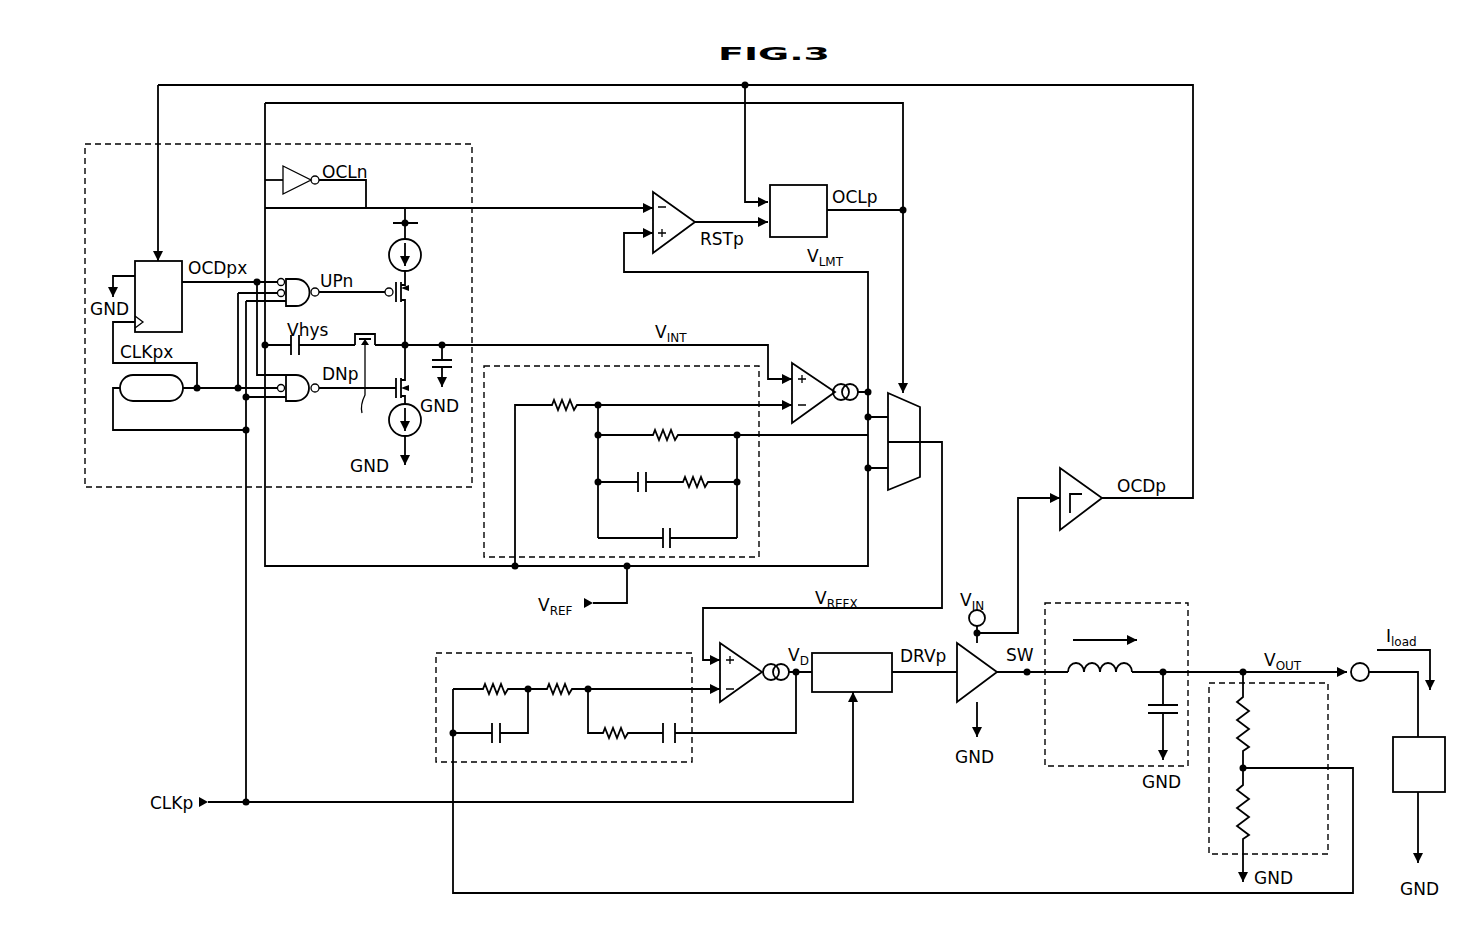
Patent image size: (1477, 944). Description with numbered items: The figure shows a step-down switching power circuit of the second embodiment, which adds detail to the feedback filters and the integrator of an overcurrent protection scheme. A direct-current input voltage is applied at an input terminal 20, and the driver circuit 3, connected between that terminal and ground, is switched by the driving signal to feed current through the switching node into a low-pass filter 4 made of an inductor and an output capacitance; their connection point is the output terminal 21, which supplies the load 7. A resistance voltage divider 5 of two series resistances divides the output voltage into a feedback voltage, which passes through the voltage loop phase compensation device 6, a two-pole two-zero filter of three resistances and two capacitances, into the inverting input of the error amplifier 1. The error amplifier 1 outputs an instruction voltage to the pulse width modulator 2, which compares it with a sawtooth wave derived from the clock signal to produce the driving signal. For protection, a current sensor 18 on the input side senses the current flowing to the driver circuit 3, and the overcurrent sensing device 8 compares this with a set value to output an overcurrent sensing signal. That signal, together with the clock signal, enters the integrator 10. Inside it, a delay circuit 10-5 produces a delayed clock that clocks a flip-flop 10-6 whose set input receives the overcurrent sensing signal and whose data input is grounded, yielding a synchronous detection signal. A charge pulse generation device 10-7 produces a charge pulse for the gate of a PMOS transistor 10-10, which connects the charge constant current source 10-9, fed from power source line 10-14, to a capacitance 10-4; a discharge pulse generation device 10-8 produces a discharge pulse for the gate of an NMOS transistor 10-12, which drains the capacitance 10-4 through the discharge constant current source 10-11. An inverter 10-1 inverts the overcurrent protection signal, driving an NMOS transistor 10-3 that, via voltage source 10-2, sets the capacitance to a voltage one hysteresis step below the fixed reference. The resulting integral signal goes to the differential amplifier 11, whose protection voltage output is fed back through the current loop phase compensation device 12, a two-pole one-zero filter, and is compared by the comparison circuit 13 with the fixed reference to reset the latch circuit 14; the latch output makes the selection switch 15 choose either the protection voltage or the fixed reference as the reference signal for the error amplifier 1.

The error amplifier 1 is at (744, 688).
The pulse width modulator 2 is at (855, 653).
The driver circuit 3 is at (957, 690).
The low-pass filter 4 is at (1188, 618).
The resistance voltage divider 5 is at (1209, 828).
The voltage loop phase compensation device 6 is at (655, 762).
The load 7 is at (1440, 737).
The overcurrent sensing device 8 is at (1082, 476).
The integrator 10 is at (472, 162).
The inverter 10-1 is at (300, 166).
The voltage source 10-2 is at (287, 333).
The NMOS transistor 10-3 is at (355, 384).
The capacitance 10-4 is at (448, 362).
The delay circuit 10-5 is at (150, 401).
The flip-flop 10-6 is at (142, 261).
The charge pulse generation device 10-7 is at (296, 279).
The discharge pulse generation device 10-8 is at (296, 401).
The charge constant current source 10-9 is at (420, 252).
The PMOS transistor 10-10 is at (410, 298).
The discharge constant current source 10-11 is at (420, 430).
The NMOS transistor 10-12 is at (410, 392).
The power source line 10-14 is at (405, 223).
The differential amplifier 11 is at (815, 378).
The current loop phase compensation device 12 is at (590, 366).
The comparison circuit 13 is at (672, 218).
The latch circuit 14 is at (805, 185).
The selection switch 15 is at (918, 402).
The current sensor 18 is at (972, 633).
The input terminal 20 is at (983, 612).
The output terminal 21 is at (1358, 663).